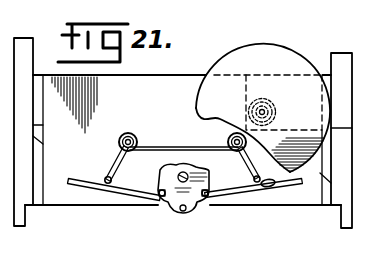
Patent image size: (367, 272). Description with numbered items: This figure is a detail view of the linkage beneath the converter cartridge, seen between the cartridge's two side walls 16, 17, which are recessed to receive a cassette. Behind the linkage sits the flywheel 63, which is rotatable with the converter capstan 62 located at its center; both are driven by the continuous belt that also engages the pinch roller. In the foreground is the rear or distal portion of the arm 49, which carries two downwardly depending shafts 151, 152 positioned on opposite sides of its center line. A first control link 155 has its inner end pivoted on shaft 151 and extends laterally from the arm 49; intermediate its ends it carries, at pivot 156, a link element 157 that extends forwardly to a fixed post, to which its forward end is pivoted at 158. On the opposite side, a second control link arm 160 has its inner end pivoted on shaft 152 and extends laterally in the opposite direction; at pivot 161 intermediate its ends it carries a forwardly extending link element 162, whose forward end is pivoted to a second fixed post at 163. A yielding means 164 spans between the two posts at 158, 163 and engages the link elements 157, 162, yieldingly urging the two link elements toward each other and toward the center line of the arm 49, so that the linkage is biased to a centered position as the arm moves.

The side wall 16 is at (344, 53).
The side wall 17 is at (22, 37).
The arm 49 is at (185, 216).
The converter capstan 62 is at (267, 108).
The flywheel 63 is at (291, 33).
The shaft 151 is at (160, 199).
The shaft 152 is at (203, 198).
The first control link 155 is at (117, 194).
The pivot 156 is at (104, 178).
The link element 157 is at (118, 152).
The pivot on fixed post 158 is at (131, 133).
The second control link arm 160 is at (248, 191).
The pivot 161 is at (271, 187).
The link element 162 is at (245, 176).
The pivot on fixed post 163 is at (228, 140).
The yielding means 164 is at (175, 146).